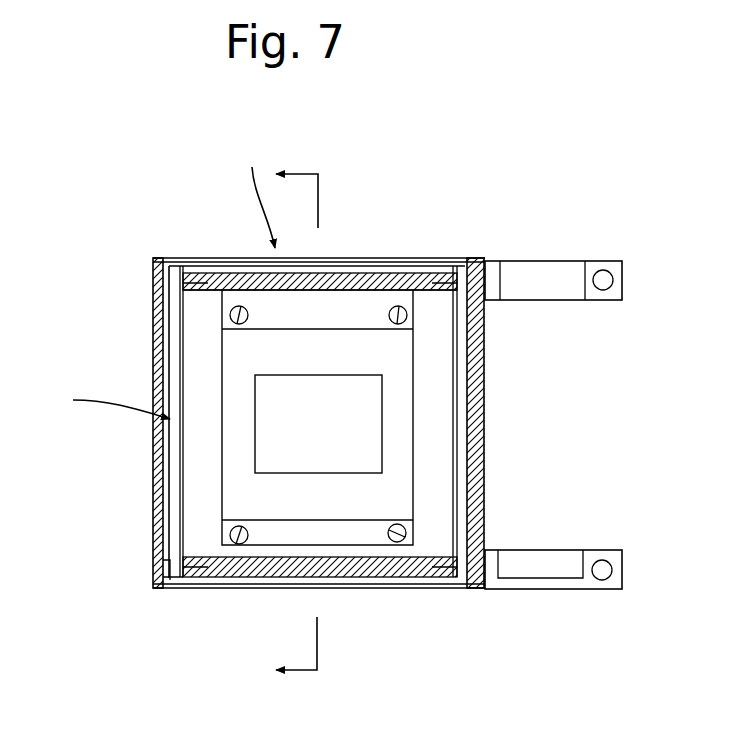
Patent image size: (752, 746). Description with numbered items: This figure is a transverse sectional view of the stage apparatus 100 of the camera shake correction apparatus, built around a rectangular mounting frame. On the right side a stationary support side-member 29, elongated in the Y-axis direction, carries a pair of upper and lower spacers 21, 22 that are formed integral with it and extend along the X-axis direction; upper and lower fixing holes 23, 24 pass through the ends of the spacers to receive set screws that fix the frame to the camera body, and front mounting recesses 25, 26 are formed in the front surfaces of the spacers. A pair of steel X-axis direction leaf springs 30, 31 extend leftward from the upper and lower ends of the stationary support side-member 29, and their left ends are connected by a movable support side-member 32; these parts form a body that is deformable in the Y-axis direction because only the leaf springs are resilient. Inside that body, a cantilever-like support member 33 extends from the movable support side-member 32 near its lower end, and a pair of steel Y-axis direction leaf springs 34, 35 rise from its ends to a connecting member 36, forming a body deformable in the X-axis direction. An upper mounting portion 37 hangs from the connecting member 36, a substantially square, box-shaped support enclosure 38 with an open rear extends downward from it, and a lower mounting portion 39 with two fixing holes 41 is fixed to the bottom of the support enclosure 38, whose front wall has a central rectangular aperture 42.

The electronic device unit 100 is at (128, 240).
The upper spacer 21 is at (600, 270).
The lower spacer 22 is at (612, 561).
The upper fixing hole 23 is at (605, 283).
The lower fixing hole 24 is at (606, 572).
The front mounting recess 25 is at (545, 280).
The front mounting recess 26 is at (533, 577).
The stationary support side-member 29 is at (471, 377).
The X-axis direction leaf spring 30 is at (415, 262).
The X-axis direction leaf spring 31 is at (382, 590).
The movable support side-member 32 is at (155, 443).
The support member 33 is at (280, 577).
The Y-axis direction leaf spring 34 is at (456, 447).
The Y-axis direction leaf spring 35 is at (182, 470).
The connecting member 36 is at (232, 277).
The upper mounting portion 37 is at (360, 310).
The support enclosure 38 is at (240, 374).
The lower mounting portion 39 is at (338, 530).
The fixing holes 41 is at (236, 324).
The rectangular aperture 42 is at (287, 473).